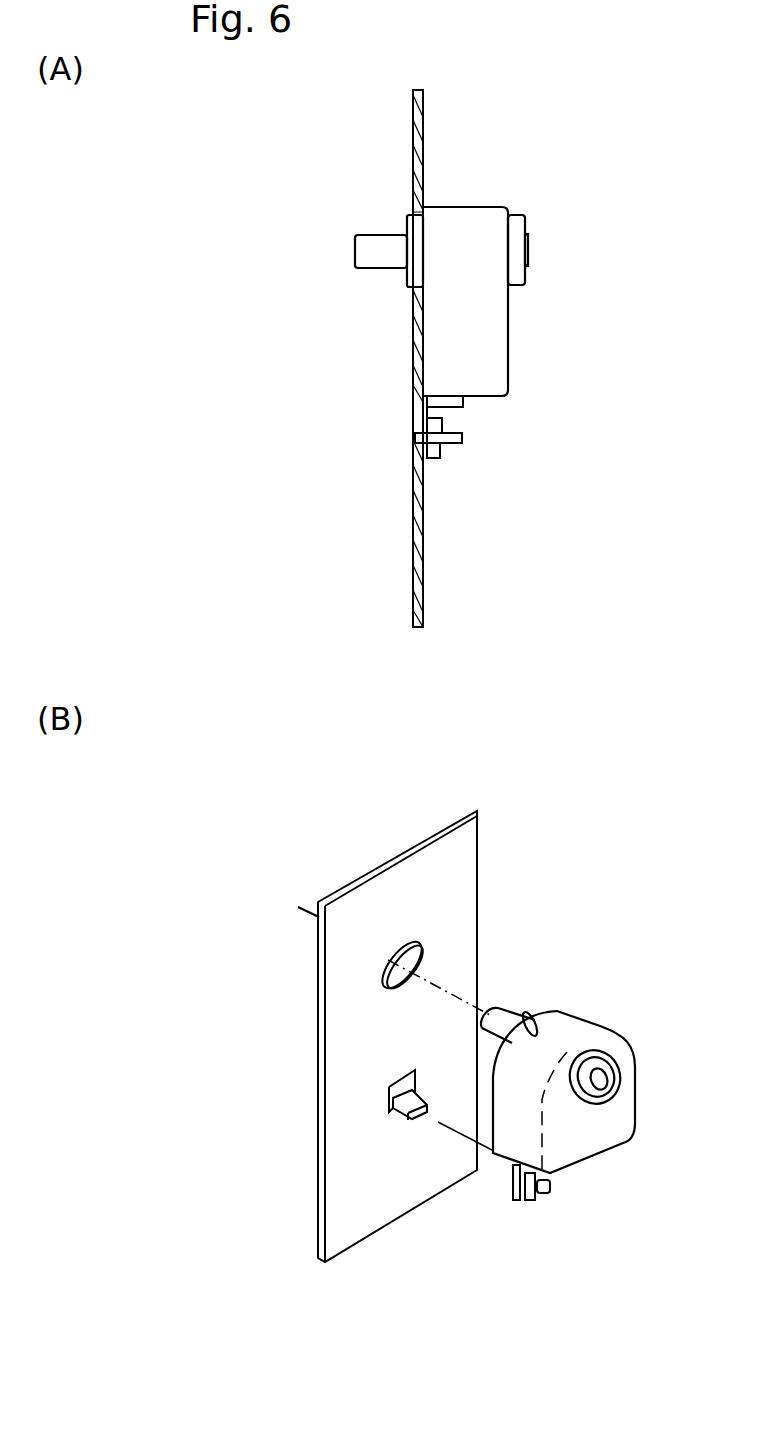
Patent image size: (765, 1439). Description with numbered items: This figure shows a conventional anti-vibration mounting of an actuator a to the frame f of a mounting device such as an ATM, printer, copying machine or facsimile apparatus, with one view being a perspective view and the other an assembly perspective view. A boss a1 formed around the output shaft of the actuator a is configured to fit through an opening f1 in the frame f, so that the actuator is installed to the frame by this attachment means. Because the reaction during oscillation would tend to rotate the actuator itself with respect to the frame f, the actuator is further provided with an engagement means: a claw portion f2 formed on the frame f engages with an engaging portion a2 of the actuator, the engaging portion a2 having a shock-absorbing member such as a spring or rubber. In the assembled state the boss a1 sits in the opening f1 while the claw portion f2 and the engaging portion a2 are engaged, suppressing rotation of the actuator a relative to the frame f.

The electrical component body a is at (473, 232).
The shaft / knob of component a1 is at (415, 275).
The engaging portion a2 is at (443, 450).
The frame f is at (420, 565).
The opening f1 is at (413, 213).
The claw portion f2 is at (457, 437).